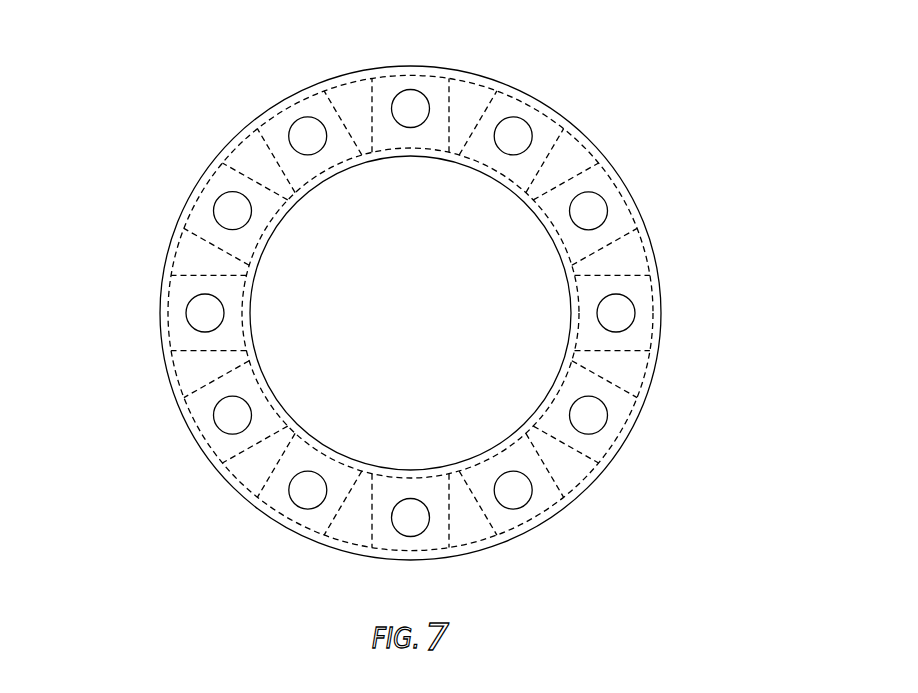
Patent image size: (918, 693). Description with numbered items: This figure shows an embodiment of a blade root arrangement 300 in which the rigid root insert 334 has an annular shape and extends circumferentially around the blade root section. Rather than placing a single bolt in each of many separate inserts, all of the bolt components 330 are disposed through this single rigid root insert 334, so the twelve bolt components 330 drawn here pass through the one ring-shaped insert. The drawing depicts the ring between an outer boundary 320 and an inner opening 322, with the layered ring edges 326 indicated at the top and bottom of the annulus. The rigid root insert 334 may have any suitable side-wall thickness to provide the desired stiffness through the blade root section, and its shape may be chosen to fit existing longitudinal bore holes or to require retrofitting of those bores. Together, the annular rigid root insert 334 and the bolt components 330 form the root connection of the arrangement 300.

The sensor ring 300 is at (650, 137).
The outer periphery 320 is at (646, 410).
The inner opening 322 is at (563, 363).
The ring surfaces 326 is at (445, 73).
The bolt components 330 is at (616, 306).
The rigid root insert 334 is at (172, 377).